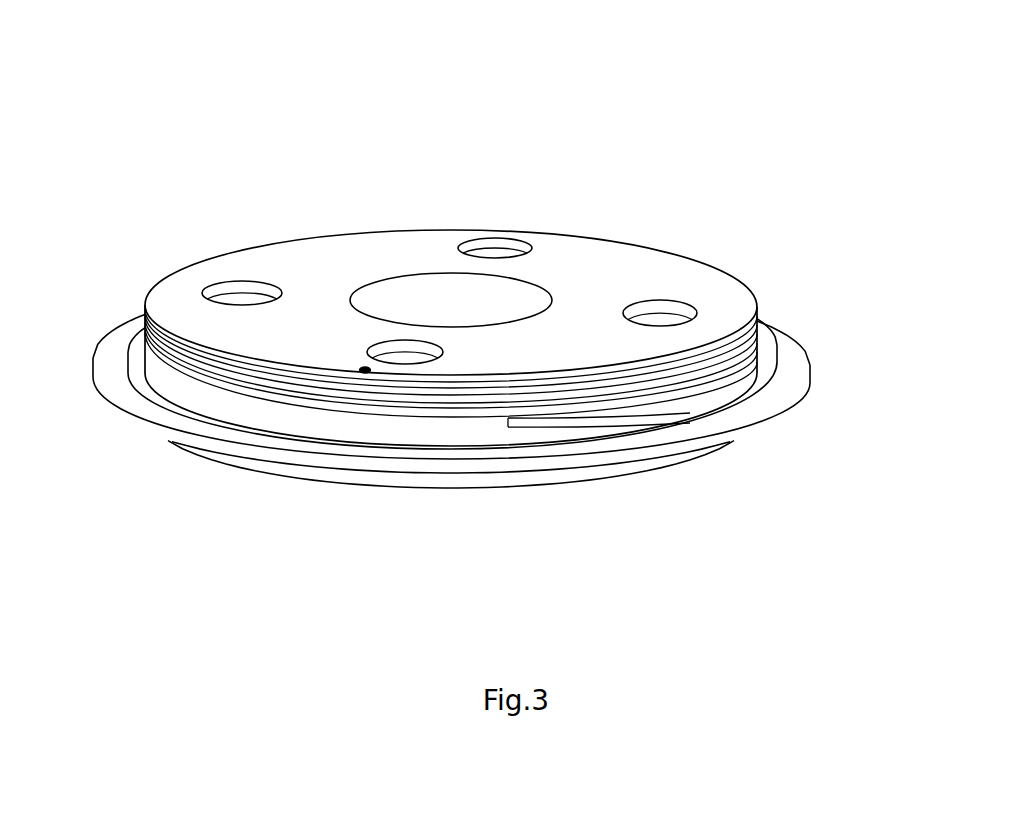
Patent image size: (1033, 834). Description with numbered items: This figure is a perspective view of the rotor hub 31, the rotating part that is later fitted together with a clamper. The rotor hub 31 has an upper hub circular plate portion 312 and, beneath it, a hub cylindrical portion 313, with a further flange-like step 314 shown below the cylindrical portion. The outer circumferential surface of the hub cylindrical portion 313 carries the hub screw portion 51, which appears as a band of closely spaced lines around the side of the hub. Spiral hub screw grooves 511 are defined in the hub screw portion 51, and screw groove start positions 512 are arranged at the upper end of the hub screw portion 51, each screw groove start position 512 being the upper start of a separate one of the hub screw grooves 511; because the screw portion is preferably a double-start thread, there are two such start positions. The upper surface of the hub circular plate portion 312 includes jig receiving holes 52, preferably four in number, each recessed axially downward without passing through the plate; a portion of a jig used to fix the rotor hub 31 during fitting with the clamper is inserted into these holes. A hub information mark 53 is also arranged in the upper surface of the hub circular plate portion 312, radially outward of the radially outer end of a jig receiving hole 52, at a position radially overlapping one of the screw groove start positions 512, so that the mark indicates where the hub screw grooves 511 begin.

The rotor hub 31 is at (695, 150).
The hub circular plate portion 312 is at (376, 257).
The hub cylindrical portion 313 is at (128, 347).
The outer flange 314 is at (123, 391).
The hub screw portion 51 is at (763, 334).
The hub screw grooves 511 is at (476, 400).
The screw groove start positions 512 is at (357, 378).
The jig receiving holes 52 is at (499, 254).
The hub information mark 53 is at (362, 367).